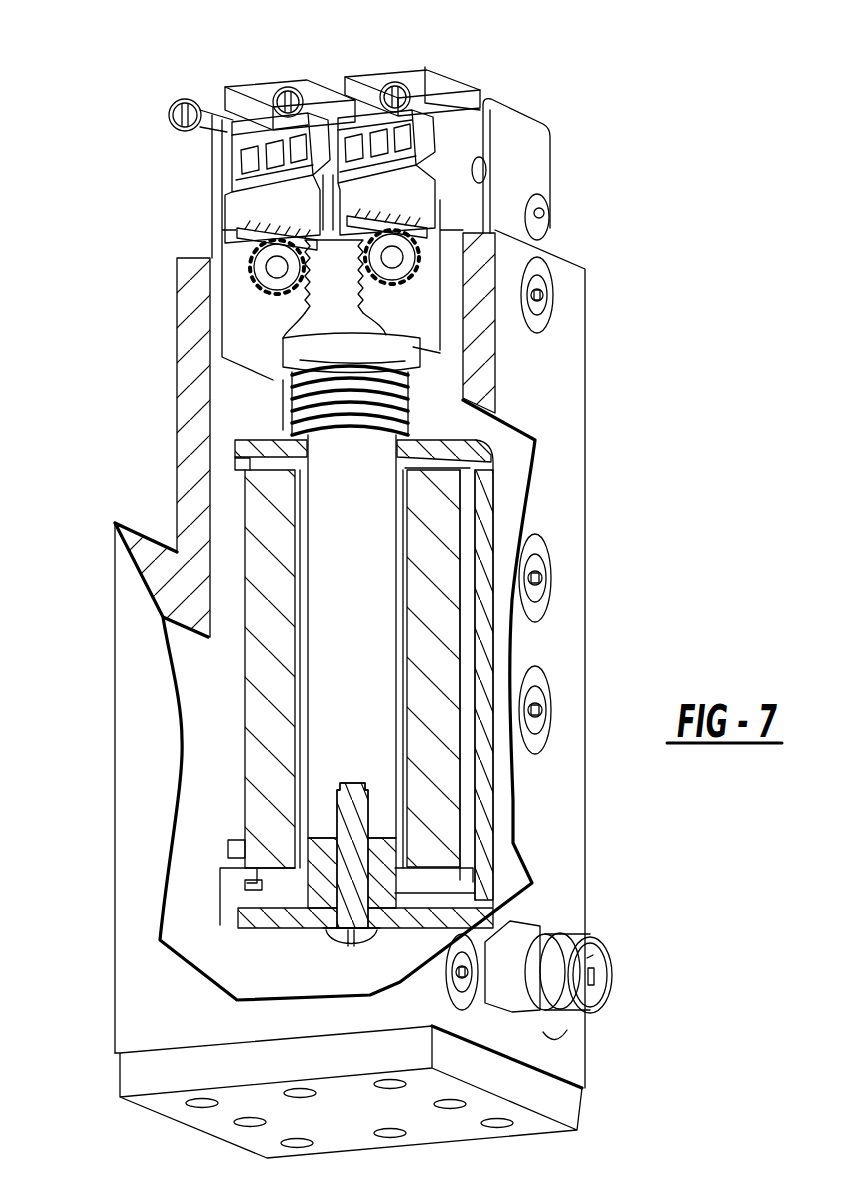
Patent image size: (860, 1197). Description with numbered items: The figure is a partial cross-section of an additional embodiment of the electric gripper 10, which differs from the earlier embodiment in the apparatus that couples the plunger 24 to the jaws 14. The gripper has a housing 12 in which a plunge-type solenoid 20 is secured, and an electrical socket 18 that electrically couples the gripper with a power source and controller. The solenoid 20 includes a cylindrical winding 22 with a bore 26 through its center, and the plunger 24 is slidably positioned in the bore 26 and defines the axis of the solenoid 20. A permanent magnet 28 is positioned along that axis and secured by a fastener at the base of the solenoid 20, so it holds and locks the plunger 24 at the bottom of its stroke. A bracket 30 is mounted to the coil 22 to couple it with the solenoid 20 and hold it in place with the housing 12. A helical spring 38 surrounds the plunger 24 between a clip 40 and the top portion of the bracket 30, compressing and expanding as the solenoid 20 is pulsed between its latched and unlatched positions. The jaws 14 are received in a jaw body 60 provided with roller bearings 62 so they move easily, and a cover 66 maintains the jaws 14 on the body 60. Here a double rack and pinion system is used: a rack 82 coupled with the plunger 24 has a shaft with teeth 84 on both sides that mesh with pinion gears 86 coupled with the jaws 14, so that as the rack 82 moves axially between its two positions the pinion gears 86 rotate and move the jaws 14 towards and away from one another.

The electric gripper 10 is at (698, 321).
The housing 12 is at (570, 668).
The jaws 14 is at (257, 93).
The electrical socket 18 is at (592, 963).
The solenoid 20 is at (205, 775).
The winding 22 is at (427, 527).
The plunger 24 is at (345, 675).
The bore 26 is at (397, 777).
The permanent magnet 28 is at (323, 888).
The bracket 30 is at (480, 457).
The helical spring 38 is at (292, 388).
The clip 40 is at (403, 352).
The jaw body 60 is at (233, 270).
The roller bearings 62 is at (240, 161).
The cover 66 is at (525, 135).
The rack 82 is at (335, 305).
The teeth 84 is at (333, 305).
The pinion gears 86 is at (250, 258).